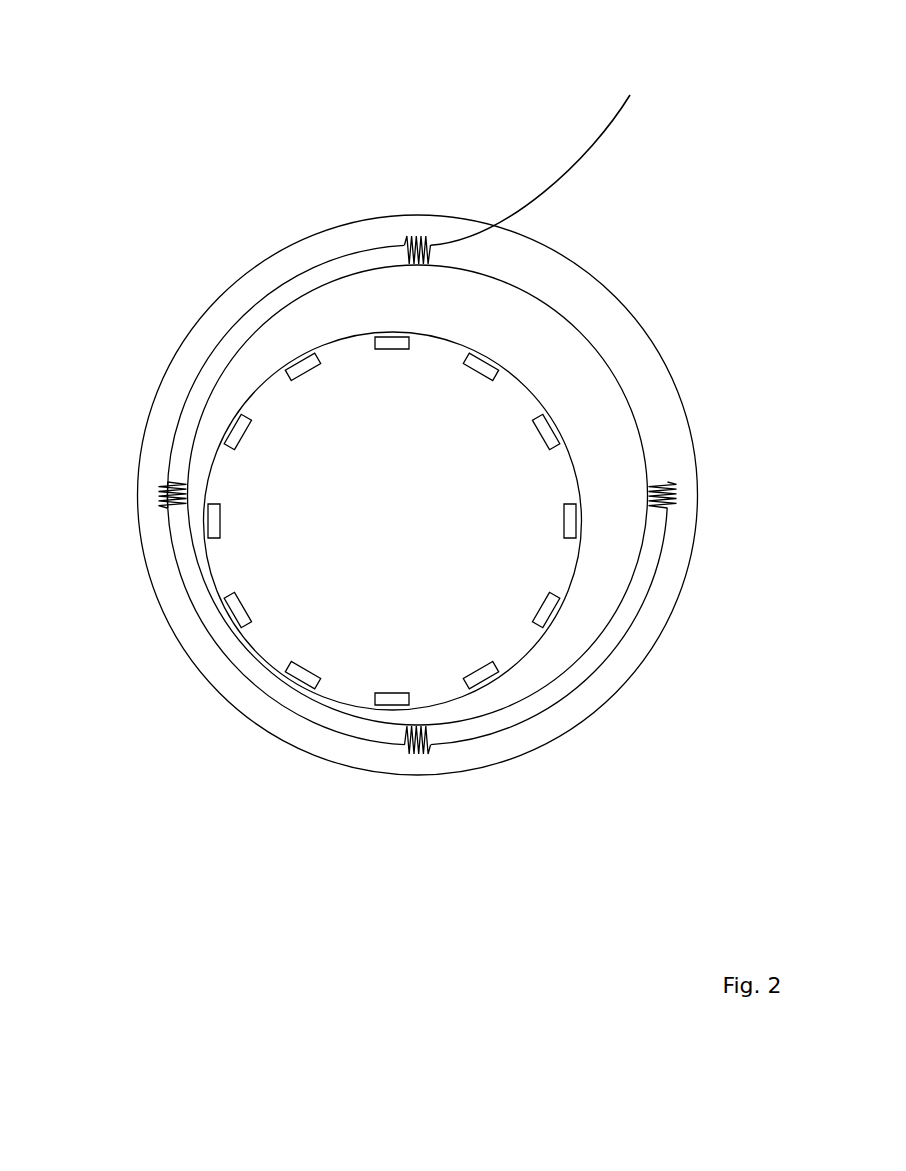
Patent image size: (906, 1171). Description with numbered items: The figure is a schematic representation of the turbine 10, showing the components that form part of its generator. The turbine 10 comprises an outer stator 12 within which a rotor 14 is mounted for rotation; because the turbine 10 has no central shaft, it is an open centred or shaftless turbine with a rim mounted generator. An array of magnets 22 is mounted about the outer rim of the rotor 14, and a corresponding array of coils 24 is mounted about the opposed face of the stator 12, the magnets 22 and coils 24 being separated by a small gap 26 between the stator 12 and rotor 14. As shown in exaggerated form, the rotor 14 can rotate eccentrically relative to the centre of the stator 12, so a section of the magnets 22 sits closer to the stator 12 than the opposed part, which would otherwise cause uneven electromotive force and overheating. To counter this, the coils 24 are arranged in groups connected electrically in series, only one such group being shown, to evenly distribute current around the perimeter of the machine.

The turbine 10 is at (265, 115).
The outer stator 12 is at (212, 297).
The rotor 14 is at (533, 392).
The magnets 22 is at (237, 432).
The coils 24 is at (414, 245).
The gap 26 is at (612, 447).